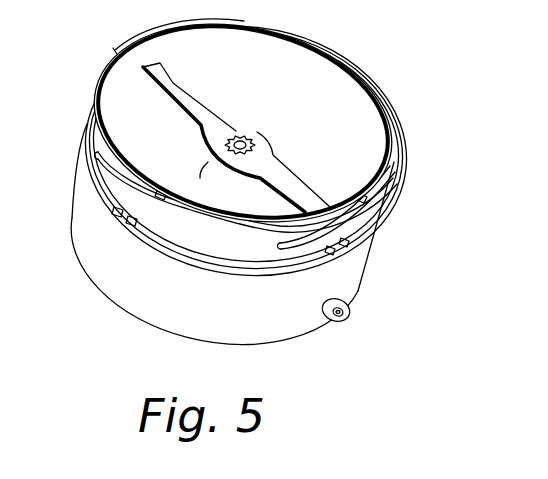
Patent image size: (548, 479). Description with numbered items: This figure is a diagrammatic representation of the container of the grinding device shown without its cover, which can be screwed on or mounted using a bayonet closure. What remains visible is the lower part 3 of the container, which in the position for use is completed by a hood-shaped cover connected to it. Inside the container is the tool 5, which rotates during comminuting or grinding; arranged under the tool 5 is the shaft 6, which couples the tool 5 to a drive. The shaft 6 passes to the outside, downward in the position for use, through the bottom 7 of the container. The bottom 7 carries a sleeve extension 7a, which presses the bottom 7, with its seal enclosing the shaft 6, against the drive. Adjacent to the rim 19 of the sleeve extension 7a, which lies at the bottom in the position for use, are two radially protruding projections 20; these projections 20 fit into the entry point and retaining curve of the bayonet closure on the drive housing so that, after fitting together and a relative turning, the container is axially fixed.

The lower part 3 is at (366, 266).
The tool 5 is at (205, 125).
The shaft 6 is at (245, 143).
The bottom 7 is at (200, 163).
The sleeve extension 7a is at (146, 299).
The rim 19 is at (292, 338).
The radially protruding projections 20 is at (348, 303).